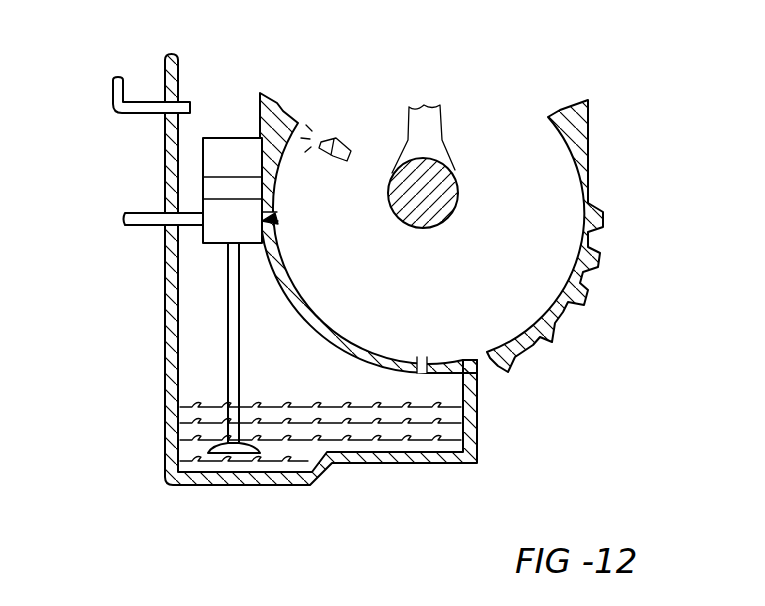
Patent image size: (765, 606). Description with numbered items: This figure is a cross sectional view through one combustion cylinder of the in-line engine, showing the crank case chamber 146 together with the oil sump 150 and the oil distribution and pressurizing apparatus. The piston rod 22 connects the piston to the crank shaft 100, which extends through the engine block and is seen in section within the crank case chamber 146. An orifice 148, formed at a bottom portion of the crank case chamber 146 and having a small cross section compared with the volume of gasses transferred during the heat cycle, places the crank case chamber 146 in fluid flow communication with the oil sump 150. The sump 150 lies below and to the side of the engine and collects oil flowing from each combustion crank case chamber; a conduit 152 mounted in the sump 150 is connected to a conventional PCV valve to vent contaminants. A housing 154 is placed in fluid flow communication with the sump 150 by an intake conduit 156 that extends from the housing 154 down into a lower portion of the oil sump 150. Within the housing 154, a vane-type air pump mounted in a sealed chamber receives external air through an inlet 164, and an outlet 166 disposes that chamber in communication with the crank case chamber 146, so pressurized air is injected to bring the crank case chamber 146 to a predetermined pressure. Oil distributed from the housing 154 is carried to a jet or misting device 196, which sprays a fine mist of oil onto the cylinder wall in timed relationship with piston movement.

The conduit 152 is at (133, 100).
The housing 154 is at (212, 152).
The inlet 164 is at (137, 210).
The intake conduit 156 is at (229, 360).
The outlet 166 is at (268, 224).
The misting device 196 is at (345, 143).
The piston rod 22 is at (430, 133).
The crank shaft 100 is at (442, 207).
The crank case chamber 146 is at (563, 197).
The orifice 148 is at (426, 358).
The oil sump 150 is at (350, 387).